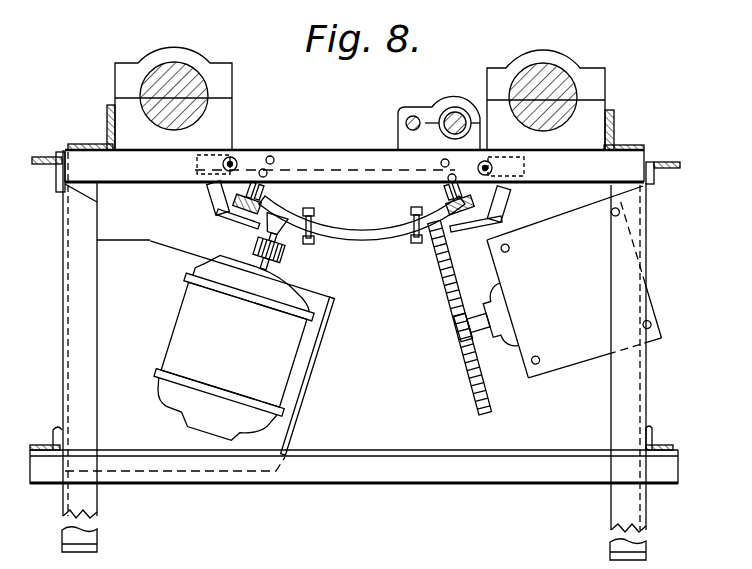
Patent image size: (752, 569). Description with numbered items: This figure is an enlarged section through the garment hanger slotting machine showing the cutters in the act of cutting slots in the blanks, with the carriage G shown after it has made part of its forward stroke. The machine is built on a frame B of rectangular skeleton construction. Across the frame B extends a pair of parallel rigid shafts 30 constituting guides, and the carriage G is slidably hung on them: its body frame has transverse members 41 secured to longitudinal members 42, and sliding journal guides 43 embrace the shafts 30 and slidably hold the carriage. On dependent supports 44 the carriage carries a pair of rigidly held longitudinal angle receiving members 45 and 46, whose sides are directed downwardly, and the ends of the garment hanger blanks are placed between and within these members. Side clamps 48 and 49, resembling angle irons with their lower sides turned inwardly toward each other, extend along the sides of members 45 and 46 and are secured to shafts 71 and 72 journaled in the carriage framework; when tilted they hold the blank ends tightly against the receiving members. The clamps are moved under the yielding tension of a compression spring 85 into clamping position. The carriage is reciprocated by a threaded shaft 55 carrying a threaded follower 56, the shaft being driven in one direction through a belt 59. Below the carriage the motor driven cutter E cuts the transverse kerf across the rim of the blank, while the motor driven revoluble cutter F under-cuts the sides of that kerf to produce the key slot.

The rigid shaft 30 is at (188, 77).
The transverse member 41 is at (354, 166).
The longitudinal member 42 is at (107, 122).
The sliding journal guide 43 is at (224, 112).
The dependent support 44 is at (325, 172).
The angle receiving member 45 is at (211, 204).
The angle receiving member 46 is at (492, 200).
The side clamp 48 is at (214, 214).
The side clamp 49 is at (512, 224).
The threaded shaft 55 is at (455, 108).
The threaded follower 56 is at (462, 100).
The belt 59 is at (411, 117).
The shaft 71 is at (228, 158).
The shaft 72 is at (489, 161).
The compression spring 85 is at (358, 231).
The frame B is at (529, 488).
The motor driven cutter E is at (472, 396).
The motor driven revoluble cutter F is at (268, 230).
The carriage G is at (316, 149).